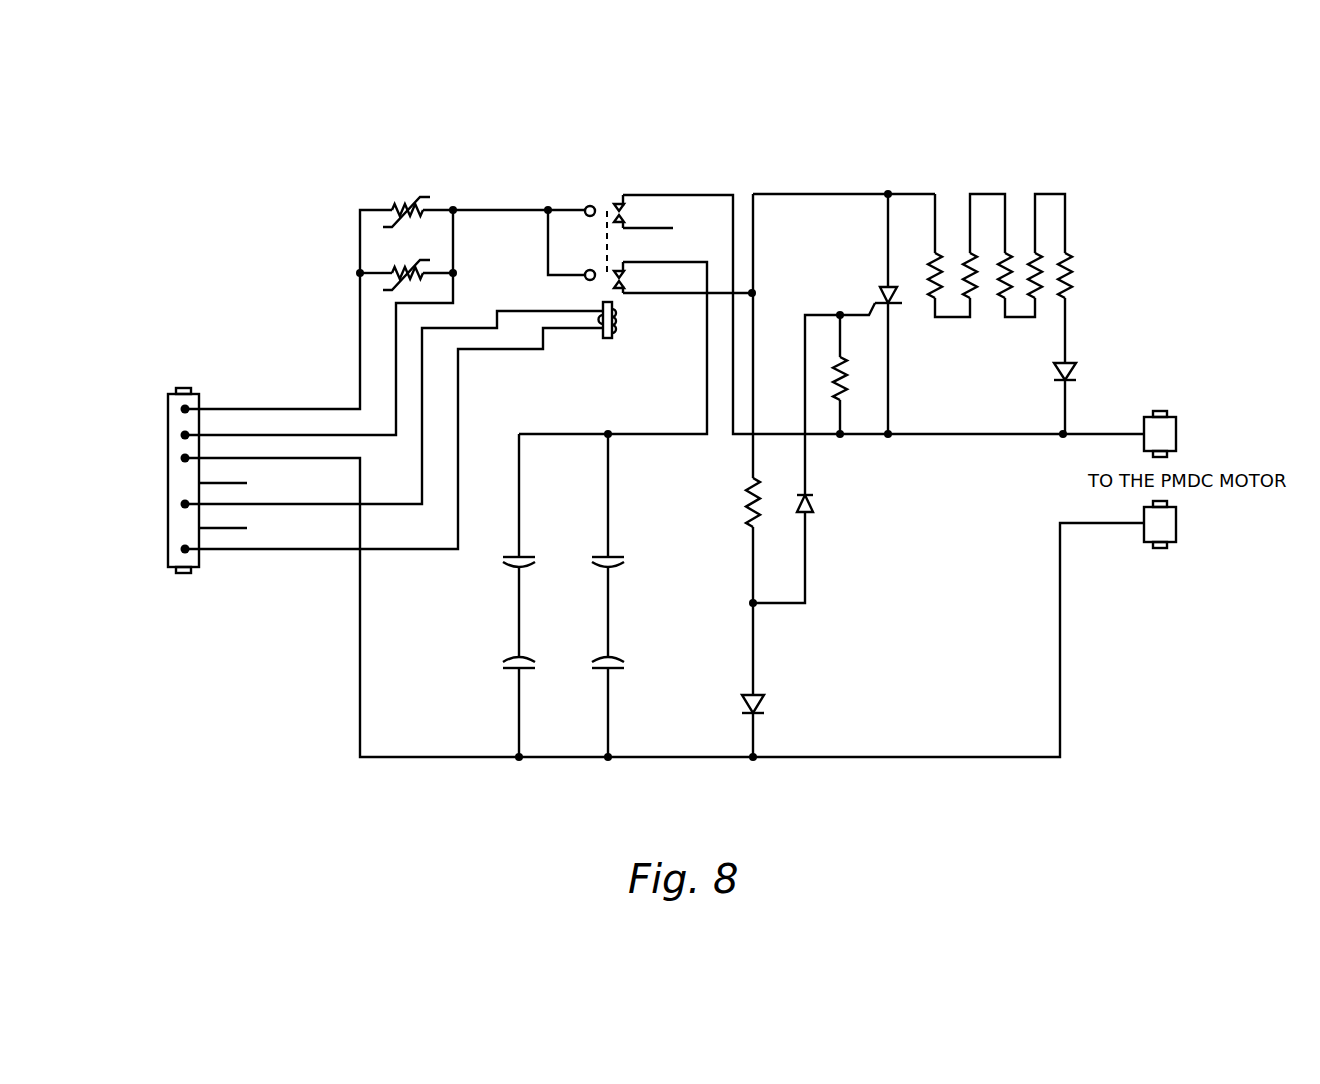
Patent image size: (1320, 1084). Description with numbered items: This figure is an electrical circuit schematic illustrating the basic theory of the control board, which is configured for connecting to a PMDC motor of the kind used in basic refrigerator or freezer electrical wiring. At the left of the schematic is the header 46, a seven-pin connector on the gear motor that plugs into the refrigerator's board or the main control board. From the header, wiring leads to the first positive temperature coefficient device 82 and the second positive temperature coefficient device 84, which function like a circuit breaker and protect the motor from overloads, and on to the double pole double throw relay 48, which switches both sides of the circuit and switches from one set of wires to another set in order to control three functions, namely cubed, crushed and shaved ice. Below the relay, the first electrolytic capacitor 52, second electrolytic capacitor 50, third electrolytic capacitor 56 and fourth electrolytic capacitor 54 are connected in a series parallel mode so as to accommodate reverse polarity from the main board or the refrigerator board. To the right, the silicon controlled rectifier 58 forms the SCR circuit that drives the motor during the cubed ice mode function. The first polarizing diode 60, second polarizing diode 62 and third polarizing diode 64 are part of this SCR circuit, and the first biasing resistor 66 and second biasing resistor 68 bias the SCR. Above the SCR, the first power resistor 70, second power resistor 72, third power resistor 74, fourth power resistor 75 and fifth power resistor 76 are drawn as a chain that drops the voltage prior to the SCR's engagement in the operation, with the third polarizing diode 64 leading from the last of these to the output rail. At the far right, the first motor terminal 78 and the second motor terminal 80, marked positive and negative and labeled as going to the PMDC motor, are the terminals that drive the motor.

The connector J1 46 is at (168, 412).
The DPDT relay K1 48 is at (605, 210).
The electrolytic capacitor C1 50 is at (615, 670).
The electrolytic capacitor C2 52 is at (615, 567).
The electrolytic capacitor C3 54 is at (503, 666).
The electrolytic capacitor C4 56 is at (503, 565).
The silicon controlled rectifier Q1 58 is at (880, 292).
The polarizing diode D1 60 is at (745, 710).
The polarizing diode D2 62 is at (815, 505).
The polarizing diode D3 64 is at (1076, 373).
The biasing resistor R6 66 is at (745, 512).
The biasing resistor R7 68 is at (840, 368).
The power resistor R1 70 is at (935, 292).
The power resistor R2 72 is at (970, 292).
The power resistor R3 74 is at (1005, 292).
The power resistor R4 75 is at (1035, 292).
The power resistor R5 76 is at (1072, 292).
The motor terminal J2 (W1) 78 is at (1176, 425).
The motor terminal J3 (W2) 80 is at (1176, 535).
The positive temperature coefficient device PTC1 82 is at (393, 212).
The positive temperature coefficient device PTC2 84 is at (393, 276).